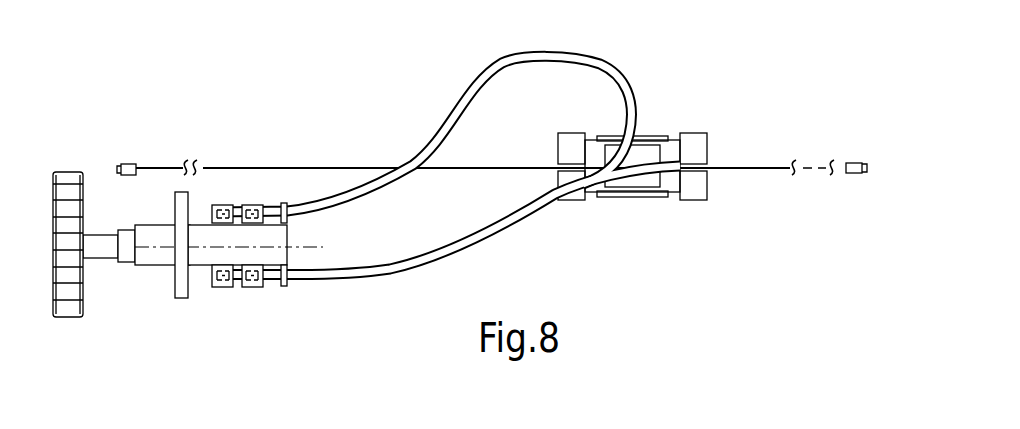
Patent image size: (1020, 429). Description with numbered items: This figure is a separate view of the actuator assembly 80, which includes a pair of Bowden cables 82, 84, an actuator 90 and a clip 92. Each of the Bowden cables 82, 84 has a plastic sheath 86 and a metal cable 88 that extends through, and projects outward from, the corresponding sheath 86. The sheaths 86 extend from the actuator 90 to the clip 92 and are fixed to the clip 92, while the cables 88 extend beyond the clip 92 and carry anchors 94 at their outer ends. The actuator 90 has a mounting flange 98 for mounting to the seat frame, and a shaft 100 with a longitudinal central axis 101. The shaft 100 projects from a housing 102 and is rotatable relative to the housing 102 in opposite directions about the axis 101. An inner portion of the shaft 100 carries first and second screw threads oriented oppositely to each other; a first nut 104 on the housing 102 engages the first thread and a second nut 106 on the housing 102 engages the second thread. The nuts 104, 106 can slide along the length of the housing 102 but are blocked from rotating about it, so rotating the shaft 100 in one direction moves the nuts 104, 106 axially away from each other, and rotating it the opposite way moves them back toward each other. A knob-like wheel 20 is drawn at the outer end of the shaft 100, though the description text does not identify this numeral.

The actuator assembly 80 is at (461, 199).
The Bowden cable 82 is at (476, 65).
The Bowden cable 84 is at (436, 268).
The plastic sheath 86 is at (446, 183).
The metal cable 88 is at (239, 166).
The actuator 90 is at (229, 254).
The clip 92 is at (708, 153).
The anchor 94 is at (127, 163).
The mounting flange 98 is at (182, 299).
The shaft 100 is at (98, 234).
The longitudinal central axis 101 is at (146, 250).
The housing 102 is at (285, 238).
The first nut 104 is at (215, 288).
The second nut 106 is at (249, 288).
The knob 20 is at (53, 314).